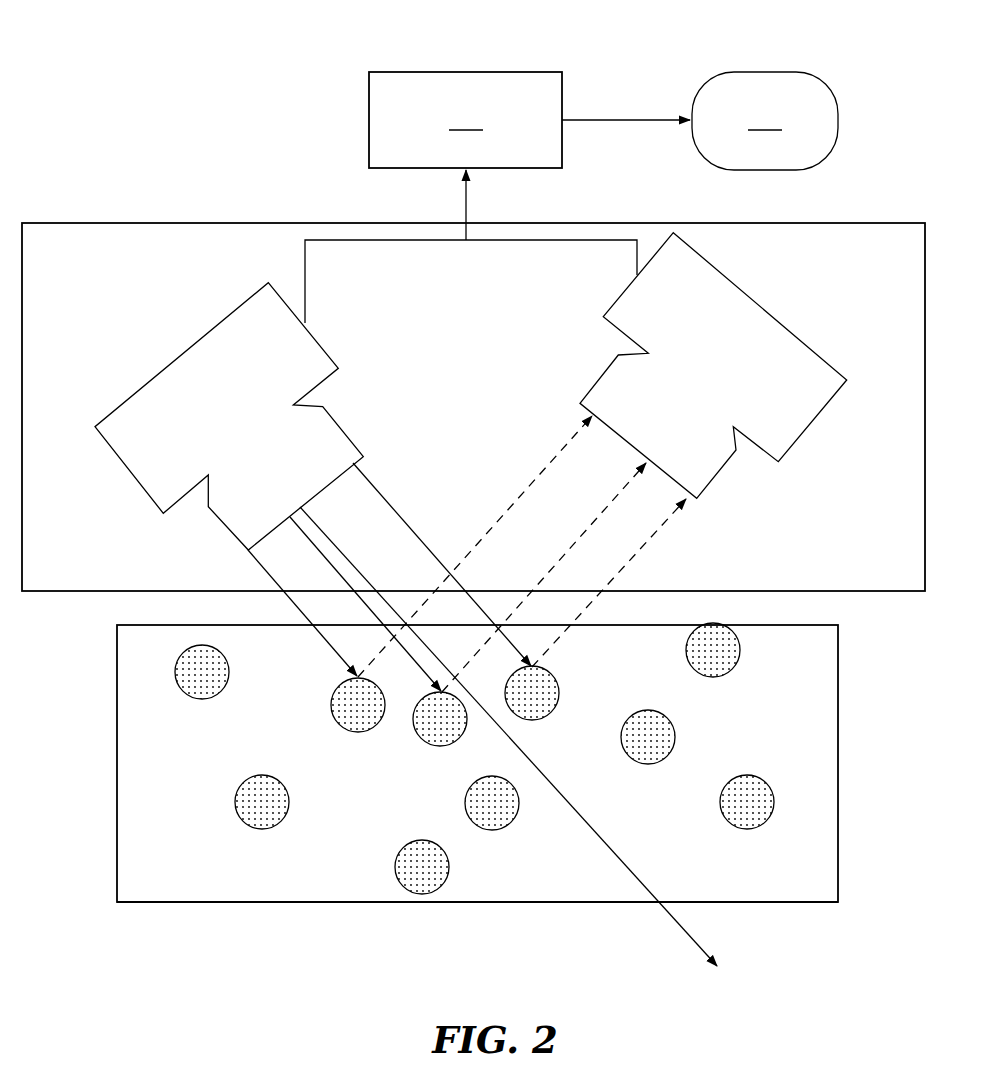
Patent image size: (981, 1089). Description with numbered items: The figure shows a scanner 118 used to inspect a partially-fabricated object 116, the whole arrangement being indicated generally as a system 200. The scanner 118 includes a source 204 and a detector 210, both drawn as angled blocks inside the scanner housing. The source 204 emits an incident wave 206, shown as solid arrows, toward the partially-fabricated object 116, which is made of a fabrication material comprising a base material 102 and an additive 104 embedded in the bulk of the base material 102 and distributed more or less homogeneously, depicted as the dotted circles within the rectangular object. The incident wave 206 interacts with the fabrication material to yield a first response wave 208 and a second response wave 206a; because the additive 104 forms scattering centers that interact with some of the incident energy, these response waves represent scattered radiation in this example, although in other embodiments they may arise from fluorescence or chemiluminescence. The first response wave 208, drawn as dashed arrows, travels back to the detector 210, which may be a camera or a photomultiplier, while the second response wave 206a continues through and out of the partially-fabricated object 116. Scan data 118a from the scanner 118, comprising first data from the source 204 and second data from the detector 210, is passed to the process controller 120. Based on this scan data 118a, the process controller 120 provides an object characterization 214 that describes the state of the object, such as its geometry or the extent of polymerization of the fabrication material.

The sensing system 200 is at (221, 82).
The scanner 118 is at (834, 223).
The scan data 118a is at (453, 248).
The process controller 120 is at (465, 156).
The object characterization 214 is at (700, 121).
The source 204 is at (180, 358).
The detector 210 is at (765, 307).
The incident wave 206 is at (432, 480).
The second response wave 206a is at (673, 923).
The first response wave 208 is at (674, 568).
The base material 102 is at (172, 868).
The additive 104 is at (330, 705).
The partially-fabricated object 116 is at (477, 902).